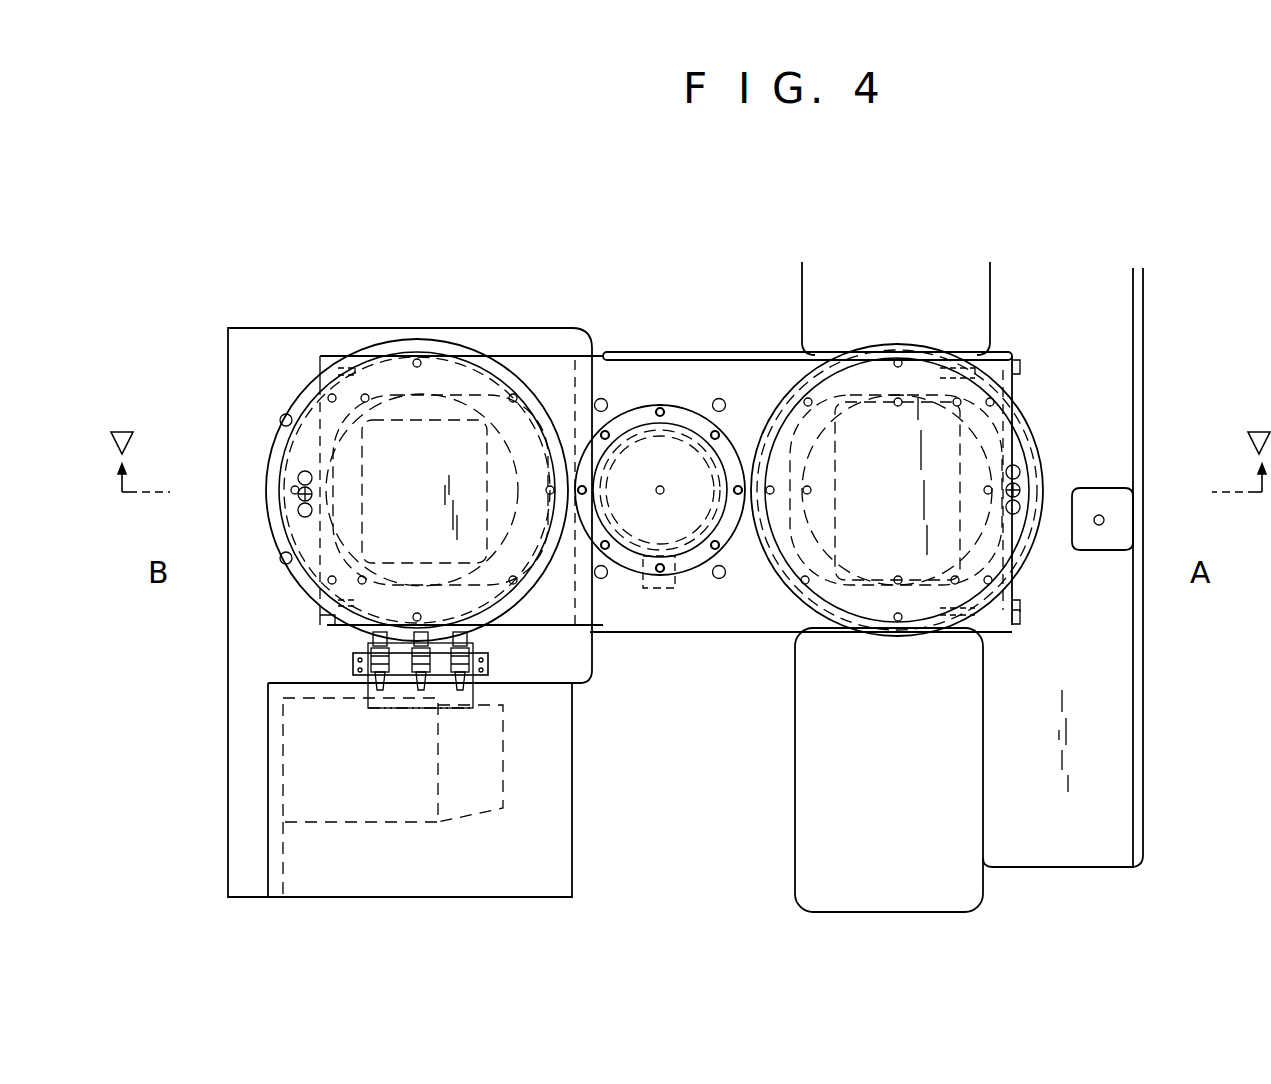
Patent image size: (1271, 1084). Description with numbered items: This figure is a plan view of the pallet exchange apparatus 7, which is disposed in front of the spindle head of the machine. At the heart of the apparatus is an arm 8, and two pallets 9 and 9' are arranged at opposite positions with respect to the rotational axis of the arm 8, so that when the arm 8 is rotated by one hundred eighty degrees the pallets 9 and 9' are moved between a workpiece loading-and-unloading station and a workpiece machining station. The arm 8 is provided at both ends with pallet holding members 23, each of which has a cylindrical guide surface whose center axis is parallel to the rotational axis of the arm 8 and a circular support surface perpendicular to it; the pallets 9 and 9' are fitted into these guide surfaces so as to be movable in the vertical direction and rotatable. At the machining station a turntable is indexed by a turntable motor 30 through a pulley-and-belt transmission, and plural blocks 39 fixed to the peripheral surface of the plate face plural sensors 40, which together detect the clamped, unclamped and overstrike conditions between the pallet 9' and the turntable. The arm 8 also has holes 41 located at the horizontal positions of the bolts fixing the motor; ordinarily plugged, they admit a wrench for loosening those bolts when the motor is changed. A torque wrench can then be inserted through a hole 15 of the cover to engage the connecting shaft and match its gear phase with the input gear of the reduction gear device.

The pallet exchange apparatus 7 is at (830, 303).
The arm 8 is at (558, 370).
The pallet 9 is at (910, 431).
The pallet 9' is at (427, 448).
The hole 15 is at (662, 494).
The pallet holding member 23 is at (332, 612).
The turntable motor 30 is at (323, 808).
The block 39 is at (450, 645).
The sensor 40 is at (433, 612).
The hole 41 is at (717, 399).